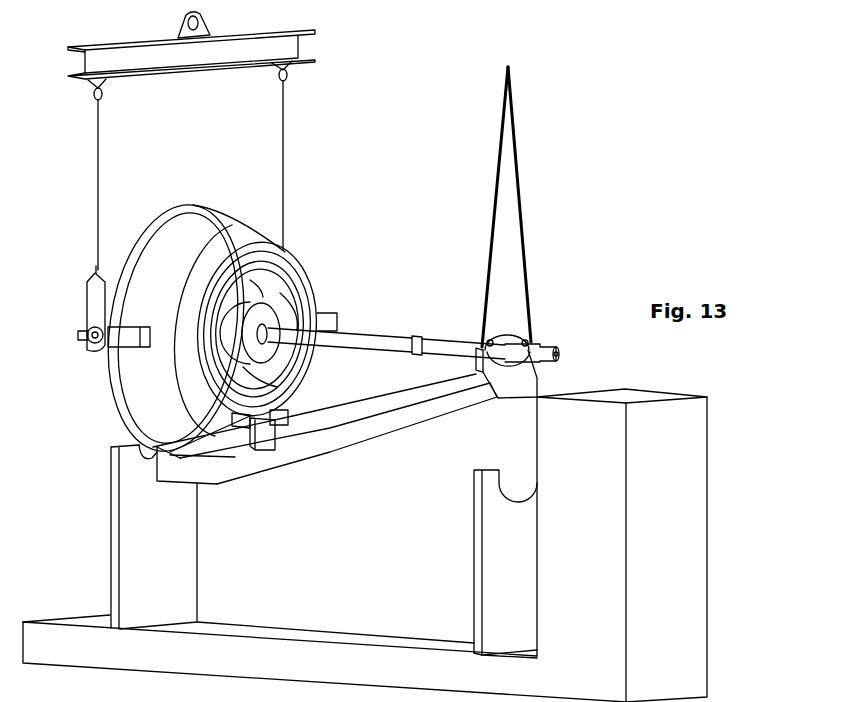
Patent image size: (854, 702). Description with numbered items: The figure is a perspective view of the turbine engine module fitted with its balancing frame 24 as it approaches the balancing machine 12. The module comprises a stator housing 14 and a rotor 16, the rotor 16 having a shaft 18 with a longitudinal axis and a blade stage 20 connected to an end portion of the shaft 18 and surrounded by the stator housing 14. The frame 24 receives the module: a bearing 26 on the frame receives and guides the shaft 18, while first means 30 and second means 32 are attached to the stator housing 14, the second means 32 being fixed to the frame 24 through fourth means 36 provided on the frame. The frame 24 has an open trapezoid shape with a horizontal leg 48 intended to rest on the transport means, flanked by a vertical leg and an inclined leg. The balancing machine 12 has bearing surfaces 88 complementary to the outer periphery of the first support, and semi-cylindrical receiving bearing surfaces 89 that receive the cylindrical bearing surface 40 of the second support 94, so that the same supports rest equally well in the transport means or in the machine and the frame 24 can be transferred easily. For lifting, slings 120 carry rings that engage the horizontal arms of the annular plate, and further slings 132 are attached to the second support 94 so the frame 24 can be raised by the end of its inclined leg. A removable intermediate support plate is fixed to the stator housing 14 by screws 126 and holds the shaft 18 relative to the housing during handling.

The balancing machine 12 is at (714, 546).
The stator housing 14 is at (199, 230).
The rotor 16 is at (404, 329).
The shaft 18 is at (350, 340).
The blade stage 20 is at (278, 297).
The balancing frame 24 is at (366, 432).
The bearing 26 is at (510, 309).
The first means 30 is at (177, 197).
The second means 32 is at (304, 302).
The fourth means 36 is at (281, 419).
The cylindrical bearing surface 40 is at (477, 365).
The horizontal leg 48 is at (192, 470).
The bearing surfaces 88 is at (148, 458).
The semi-cylindrical receiving bearing surfaces 89 is at (507, 490).
The second support 94 is at (521, 365).
The slings 120 is at (287, 143).
The screws 126 is at (100, 345).
The slings 132 is at (520, 211).